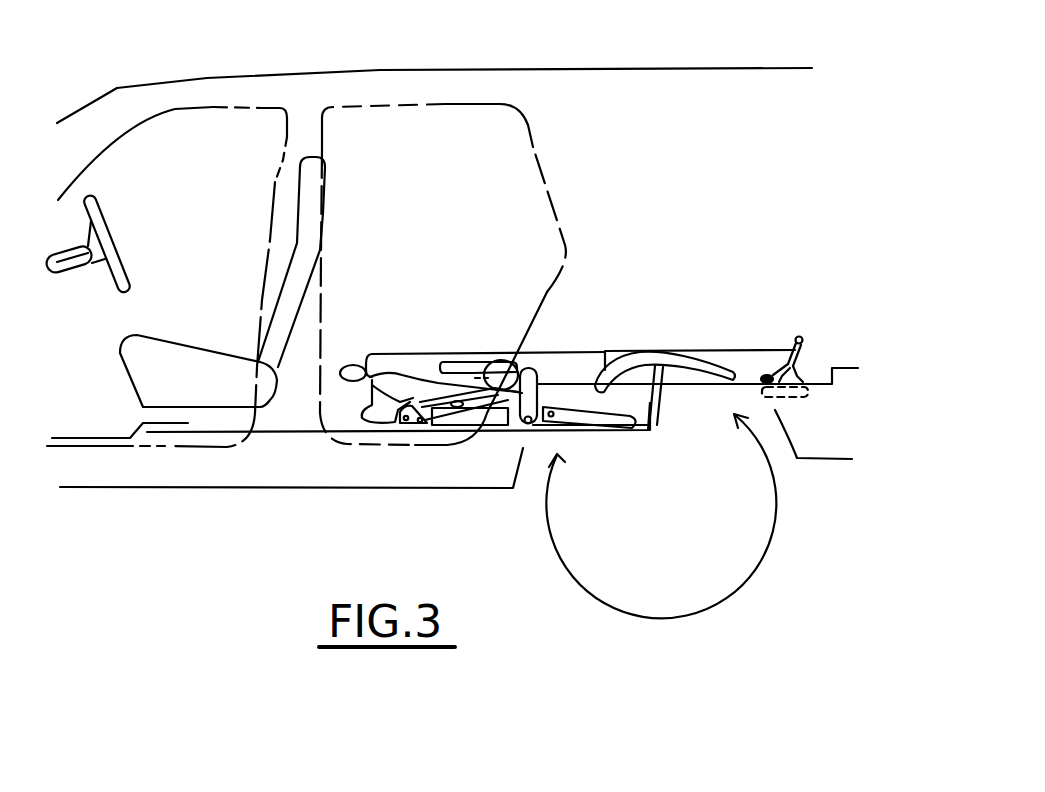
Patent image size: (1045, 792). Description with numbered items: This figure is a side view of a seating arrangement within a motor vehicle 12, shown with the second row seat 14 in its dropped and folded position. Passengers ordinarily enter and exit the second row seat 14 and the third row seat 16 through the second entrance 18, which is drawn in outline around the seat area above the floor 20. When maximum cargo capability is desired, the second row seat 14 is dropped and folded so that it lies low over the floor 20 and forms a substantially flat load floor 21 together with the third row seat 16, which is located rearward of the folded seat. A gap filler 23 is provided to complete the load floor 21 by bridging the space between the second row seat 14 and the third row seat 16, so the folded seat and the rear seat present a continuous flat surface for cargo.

The motor vehicle 12 is at (584, 51).
The second row seat 14 is at (408, 358).
The third row seat 16 is at (720, 350).
The second entrance 18 is at (460, 112).
The floor 20 is at (347, 438).
The load floor 21 is at (625, 350).
The gap filler 23 is at (567, 350).